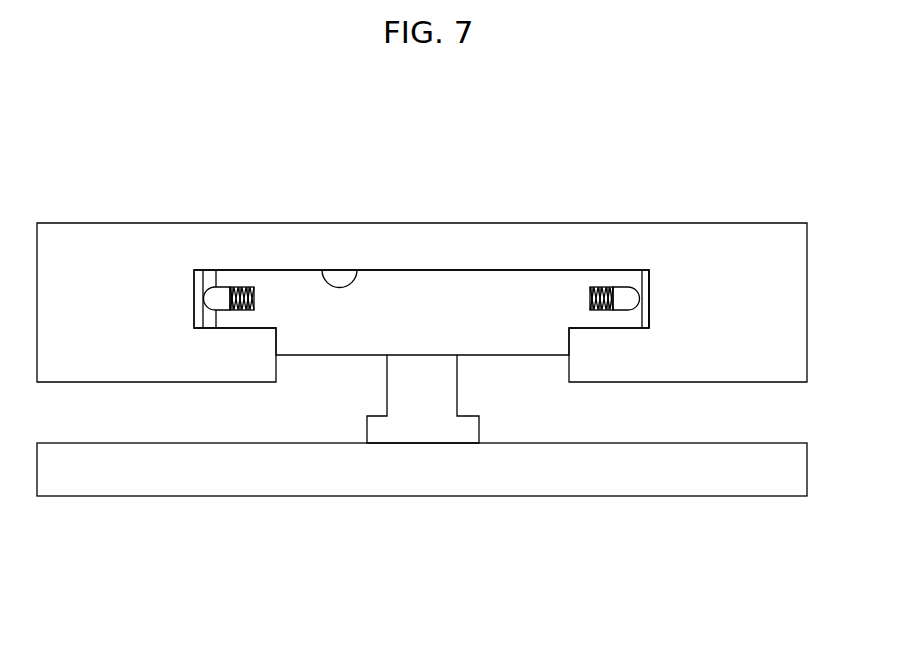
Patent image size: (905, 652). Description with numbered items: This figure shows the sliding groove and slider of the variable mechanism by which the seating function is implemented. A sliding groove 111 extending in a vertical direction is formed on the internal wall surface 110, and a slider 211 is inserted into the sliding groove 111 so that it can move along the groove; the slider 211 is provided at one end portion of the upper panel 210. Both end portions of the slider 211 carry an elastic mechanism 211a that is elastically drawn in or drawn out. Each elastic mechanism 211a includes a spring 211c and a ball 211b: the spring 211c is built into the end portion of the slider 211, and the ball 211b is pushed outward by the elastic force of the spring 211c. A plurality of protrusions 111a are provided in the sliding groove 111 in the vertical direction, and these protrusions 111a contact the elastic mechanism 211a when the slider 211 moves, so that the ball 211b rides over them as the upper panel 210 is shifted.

The internal wall surface 110 is at (445, 238).
The sliding groove 111 is at (355, 272).
The protrusion 111a is at (647, 272).
The slider 211 is at (523, 293).
The elastic mechanism 211a is at (381, 206).
The ball 211b is at (215, 297).
The spring 211c is at (243, 285).
The upper panel 210 is at (567, 475).